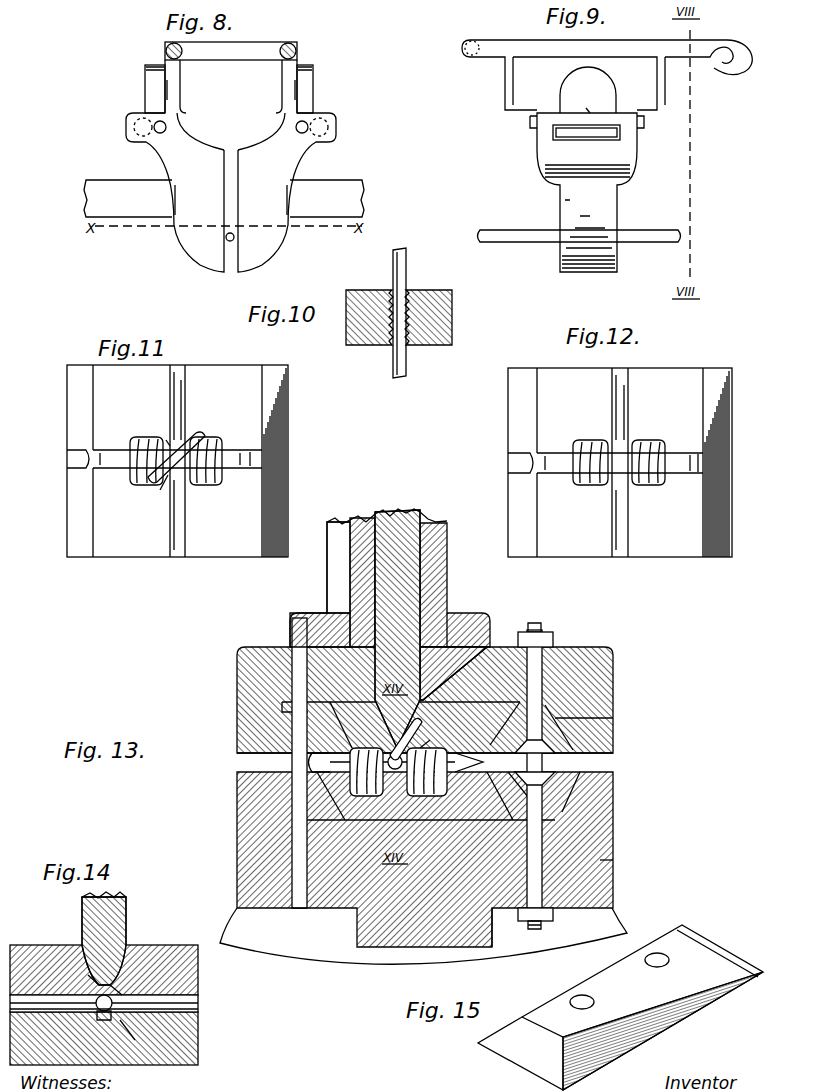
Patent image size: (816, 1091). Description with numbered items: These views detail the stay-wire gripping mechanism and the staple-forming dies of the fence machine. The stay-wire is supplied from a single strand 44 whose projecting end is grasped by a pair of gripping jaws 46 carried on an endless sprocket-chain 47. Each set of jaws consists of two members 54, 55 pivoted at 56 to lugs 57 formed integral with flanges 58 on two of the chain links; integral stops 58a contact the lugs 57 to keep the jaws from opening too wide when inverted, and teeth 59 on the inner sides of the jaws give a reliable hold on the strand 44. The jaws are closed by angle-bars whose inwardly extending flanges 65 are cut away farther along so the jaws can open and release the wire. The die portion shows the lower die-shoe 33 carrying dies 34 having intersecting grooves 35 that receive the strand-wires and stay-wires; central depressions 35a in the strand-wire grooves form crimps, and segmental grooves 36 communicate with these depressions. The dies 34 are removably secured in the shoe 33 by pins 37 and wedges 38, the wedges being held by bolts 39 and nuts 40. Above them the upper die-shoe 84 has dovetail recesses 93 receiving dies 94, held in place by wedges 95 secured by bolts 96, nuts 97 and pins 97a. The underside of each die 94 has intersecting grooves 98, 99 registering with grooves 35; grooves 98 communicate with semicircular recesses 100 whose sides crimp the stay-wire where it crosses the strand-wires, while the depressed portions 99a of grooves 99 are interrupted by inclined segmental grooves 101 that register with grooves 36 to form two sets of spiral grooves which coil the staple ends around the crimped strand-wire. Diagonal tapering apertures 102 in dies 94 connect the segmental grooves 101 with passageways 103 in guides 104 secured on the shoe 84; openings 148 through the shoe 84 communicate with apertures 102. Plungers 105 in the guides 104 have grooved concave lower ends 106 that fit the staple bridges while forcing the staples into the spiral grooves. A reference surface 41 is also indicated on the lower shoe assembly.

In FIG. 13, the lower die-shoe 33 is at (600, 856).
In FIG. 12, the dies 34 is at (620, 462).
In FIG. 13, the dies 34 is at (290, 800).
In FIG. 14, the dies 34 is at (198, 1046).
In FIG. 12, the intersecting grooves 35 is at (626, 423).
In FIG. 13, the intersecting grooves 35 is at (386, 788).
In FIG. 14, the intersecting grooves 35 is at (198, 1020).
In FIG. 12, the central depressions 35a is at (560, 452).
In FIG. 13, the central depressions 35a is at (312, 763).
In FIG. 14, the central depressions 35a is at (108, 1020).
In FIG. 12, the segmental grooves 36 is at (590, 487).
In FIG. 13, the segmental grooves 36 is at (410, 780).
In FIG. 14, the segmental grooves 36 is at (140, 1048).
In FIG. 13, the pins 37 is at (295, 919).
In FIG. 13, the wedges 38 is at (565, 796).
In FIG. 14, the wedges 38 is at (198, 988).
In FIG. 13, the bolts 39 is at (507, 930).
In FIG. 13, the nuts 40 is at (548, 914).
In FIG. 13, the base plate 41 is at (423, 936).
In FIG. 8, the strand 44 is at (227, 241).
In FIG. 9, the strand 44 is at (508, 222).
In FIG. 10, the strand 44 is at (401, 256).
In FIG. 8, the gripping jaws 46 is at (231, 192).
In FIG. 8, the endless sprocket-chain 47 is at (231, 77).
In FIG. 9, the endless sprocket-chain 47 is at (607, 75).
In FIG. 8, the jaw member 54 is at (189, 200).
In FIG. 9, the jaw member 54 is at (588, 221).
In FIG. 10, the jaw member 54 is at (360, 290).
In FIG. 8, the jaw member 55 is at (268, 200).
In FIG. 10, the jaw member 55 is at (452, 302).
In FIG. 8, the pivot 56 is at (154, 123).
In FIG. 9, the pivot 56 is at (532, 122).
In FIG. 8, the lugs 57 is at (145, 75).
In FIG. 9, the lugs 57 is at (588, 90).
In FIG. 8, the flanges 58 is at (181, 97).
In FIG. 8, the integral stops 58a is at (134, 130).
In FIG. 9, the integral stops 58a is at (583, 101).
In FIG. 10, the teeth 59 is at (409, 292).
In FIG. 8, the inwardly extending flanges 65 is at (224, 198).
In FIG. 13, the upper die-shoe 84 is at (237, 690).
In FIG. 13, the dovetail recesses 93 is at (280, 716).
In FIG. 11, the dies 94 is at (73, 396).
In FIG. 13, the dies 94 is at (237, 735).
In FIG. 13, the wedges 95 is at (560, 718).
In FIG. 15, the wedges 95 is at (620, 1007).
In FIG. 13, the bolts 96 is at (534, 623).
In FIG. 13, the nuts 97 is at (553, 640).
In FIG. 13, the pins 97a is at (298, 652).
In FIG. 11, the grooves 98 is at (177, 392).
In FIG. 11, the grooves 99 is at (110, 450).
In FIG. 14, the grooves 99 is at (100, 1022).
In FIG. 13, the depressed portions 99a is at (484, 763).
In FIG. 11, the semicircular recesses 100 is at (170, 444).
In FIG. 13, the semicircular recesses 100 is at (389, 757).
In FIG. 14, the semicircular recesses 100 is at (98, 996).
In FIG. 11, the inclined segmental grooves 101 is at (140, 486).
In FIG. 13, the inclined segmental grooves 101 is at (425, 745).
In FIG. 11, the diagonal tapering apertures 102 is at (198, 436).
In FIG. 13, the diagonal tapering apertures 102 is at (405, 735).
In FIG. 14, the diagonal tapering apertures 102 is at (118, 990).
In FIG. 13, the passageways 103 is at (370, 586).
In FIG. 13, the guides 104 is at (447, 586).
In FIG. 11, the plungers 105 is at (164, 490).
In FIG. 13, the plungers 105 is at (395, 512).
In FIG. 14, the plungers 105 is at (118, 916).
In FIG. 13, the grooved concave lower ends 106 is at (484, 650).
In FIG. 14, the grooved concave lower ends 106 is at (92, 978).
In FIG. 13, the openings 148 is at (452, 640).